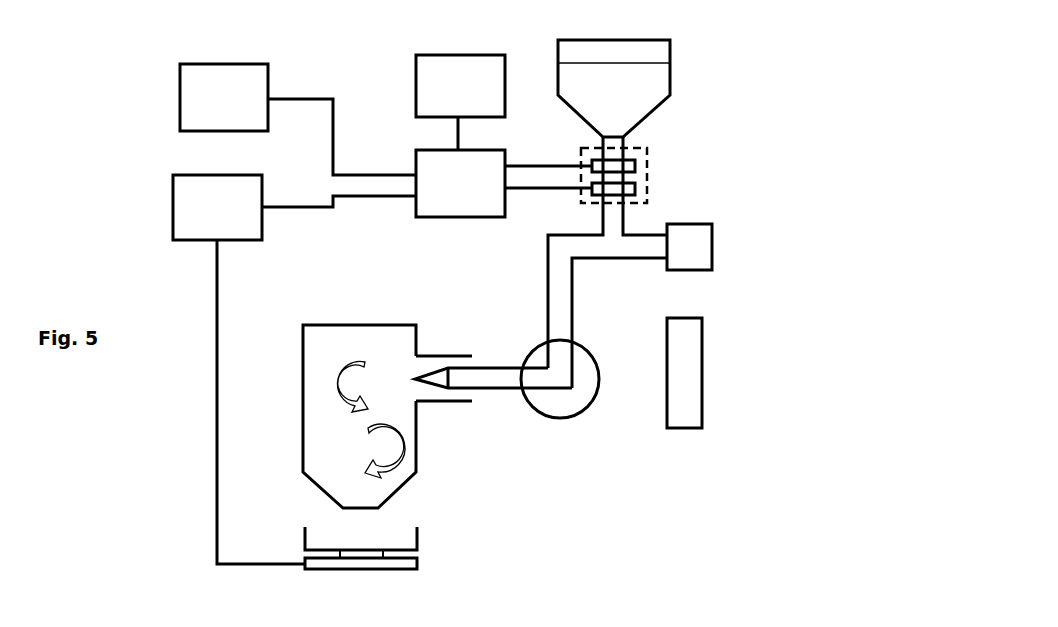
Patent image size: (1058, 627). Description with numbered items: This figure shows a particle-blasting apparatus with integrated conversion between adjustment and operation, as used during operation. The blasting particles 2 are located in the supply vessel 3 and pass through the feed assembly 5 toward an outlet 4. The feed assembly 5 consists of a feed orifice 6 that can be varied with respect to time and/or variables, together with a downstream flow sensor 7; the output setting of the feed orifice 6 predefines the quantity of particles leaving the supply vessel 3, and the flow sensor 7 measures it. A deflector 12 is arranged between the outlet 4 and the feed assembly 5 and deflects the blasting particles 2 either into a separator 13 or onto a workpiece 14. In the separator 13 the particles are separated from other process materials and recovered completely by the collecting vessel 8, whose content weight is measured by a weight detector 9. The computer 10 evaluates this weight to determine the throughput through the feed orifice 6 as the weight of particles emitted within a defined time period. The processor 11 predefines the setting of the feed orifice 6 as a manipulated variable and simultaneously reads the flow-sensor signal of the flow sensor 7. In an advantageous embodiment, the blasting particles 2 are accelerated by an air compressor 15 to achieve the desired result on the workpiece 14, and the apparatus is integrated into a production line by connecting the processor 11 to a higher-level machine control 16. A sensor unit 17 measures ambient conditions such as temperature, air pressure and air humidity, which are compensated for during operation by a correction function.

The blasting particles 2 is at (635, 100).
The supply vessel 3 is at (670, 52).
The outlet 4 is at (438, 382).
The feed assembly 5 is at (647, 148).
The feed orifice 6 is at (635, 166).
The flow sensor 7 is at (635, 187).
The collecting vessel 8 is at (417, 534).
The weight detector 9 is at (410, 564).
The computer 10 is at (188, 218).
The processor 11 is at (485, 203).
The deflector 12 is at (567, 406).
The separator 13 is at (343, 325).
The workpiece 14 is at (688, 350).
The air compressor 15 is at (700, 255).
The higher-level machine control 16 is at (183, 85).
The sensor unit 17 is at (427, 73).